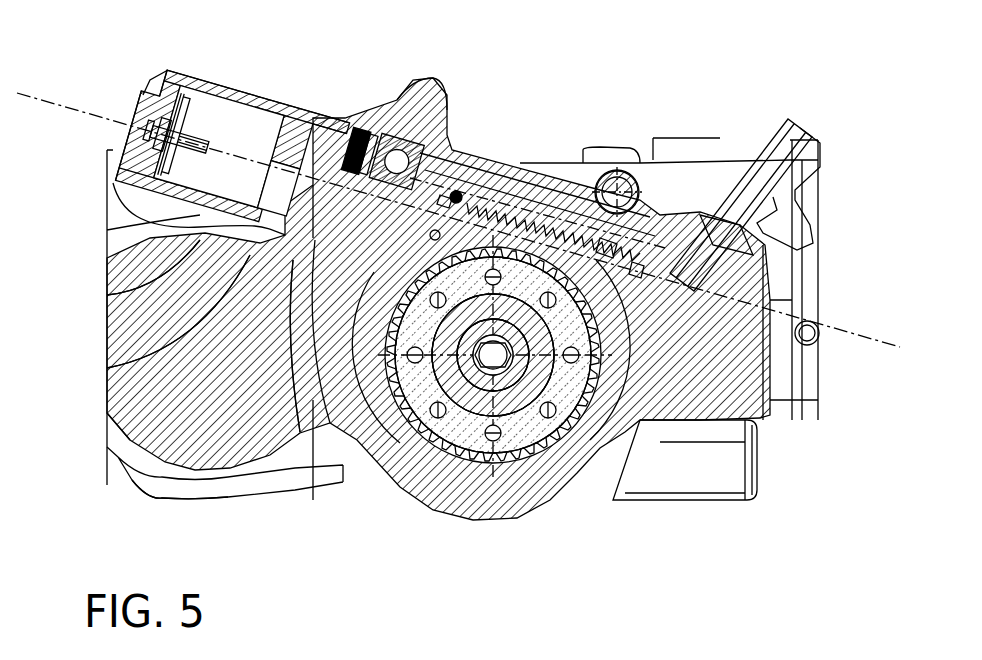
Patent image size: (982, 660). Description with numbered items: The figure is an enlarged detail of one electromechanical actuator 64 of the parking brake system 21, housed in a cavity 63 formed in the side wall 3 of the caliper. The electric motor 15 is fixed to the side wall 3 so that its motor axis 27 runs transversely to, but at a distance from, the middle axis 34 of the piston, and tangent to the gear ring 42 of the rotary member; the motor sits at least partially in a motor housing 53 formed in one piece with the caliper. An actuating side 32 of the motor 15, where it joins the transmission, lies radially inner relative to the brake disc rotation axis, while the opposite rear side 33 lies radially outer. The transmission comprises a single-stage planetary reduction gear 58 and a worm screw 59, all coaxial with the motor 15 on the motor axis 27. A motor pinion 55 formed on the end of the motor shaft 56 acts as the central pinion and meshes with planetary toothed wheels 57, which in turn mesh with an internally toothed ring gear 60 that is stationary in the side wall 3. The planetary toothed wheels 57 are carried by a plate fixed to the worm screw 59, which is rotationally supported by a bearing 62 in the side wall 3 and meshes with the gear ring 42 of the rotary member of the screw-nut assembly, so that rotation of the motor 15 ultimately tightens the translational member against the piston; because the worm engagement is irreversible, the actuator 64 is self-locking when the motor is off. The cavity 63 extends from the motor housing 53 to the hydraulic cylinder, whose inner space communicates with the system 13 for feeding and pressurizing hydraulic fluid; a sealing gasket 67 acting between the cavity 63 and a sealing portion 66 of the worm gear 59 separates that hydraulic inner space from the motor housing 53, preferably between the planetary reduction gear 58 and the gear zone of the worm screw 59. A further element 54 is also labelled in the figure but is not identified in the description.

The side wall 3 is at (765, 405).
The system for feeding and pressurizing a hydraulic fluid 13 is at (778, 136).
The electric motor 15 is at (218, 118).
The parking brake system 21 is at (556, 210).
The motor axis 27 is at (62, 96).
The actuating side 32 is at (340, 136).
The rear side 33 is at (158, 75).
The middle axis of the piston 34 is at (460, 468).
The gear ring 42 is at (530, 395).
The motor housing 53 is at (366, 128).
The motor housing wall 54 is at (260, 80).
The motor pinion 55 is at (107, 368).
The motor shaft 56 is at (107, 295).
The planetary toothed wheels 57 is at (112, 423).
The single-stage planetary reduction gear 58 is at (265, 478).
The worm screw 59 is at (535, 195).
The internally toothed ring gear 60 is at (305, 262).
The bearing 62 is at (445, 85).
The cavity 63 is at (490, 166).
The electromechanical actuator 64 is at (610, 168).
The sealing portion 66 is at (350, 445).
The sealing gasket 67 is at (410, 490).